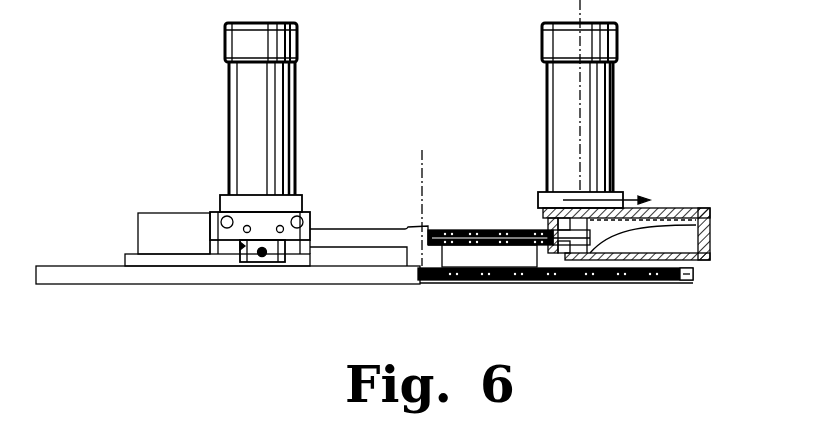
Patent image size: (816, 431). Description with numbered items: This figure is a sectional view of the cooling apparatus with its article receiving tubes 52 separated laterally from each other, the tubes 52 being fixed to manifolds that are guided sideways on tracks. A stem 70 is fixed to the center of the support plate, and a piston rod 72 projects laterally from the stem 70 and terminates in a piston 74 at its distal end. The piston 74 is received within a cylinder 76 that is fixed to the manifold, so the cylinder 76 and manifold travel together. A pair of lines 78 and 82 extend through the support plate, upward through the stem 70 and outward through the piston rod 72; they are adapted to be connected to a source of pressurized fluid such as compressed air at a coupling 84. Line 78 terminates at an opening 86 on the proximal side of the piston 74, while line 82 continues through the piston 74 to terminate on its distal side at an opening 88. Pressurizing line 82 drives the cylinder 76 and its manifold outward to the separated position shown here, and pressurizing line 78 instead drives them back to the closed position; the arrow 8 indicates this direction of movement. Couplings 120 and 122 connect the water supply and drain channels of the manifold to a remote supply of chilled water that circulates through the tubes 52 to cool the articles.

The direction arrow 8 is at (611, 107).
The article receiving tube 52 is at (258, 131).
The stem 70 is at (436, 228).
The piston rod 72 is at (362, 238).
The piston 74 is at (573, 260).
The cylinder 76 is at (680, 208).
The line 78 is at (483, 248).
The line 82 is at (482, 232).
The coupling 84 is at (697, 274).
The opening 86 is at (557, 270).
The opening 88 is at (640, 262).
The coupling 120 is at (246, 233).
The coupling 122 is at (281, 233).